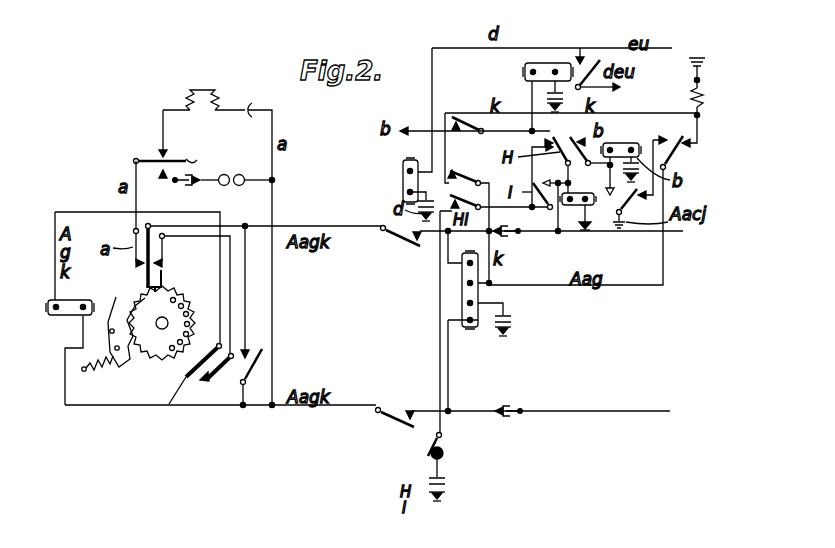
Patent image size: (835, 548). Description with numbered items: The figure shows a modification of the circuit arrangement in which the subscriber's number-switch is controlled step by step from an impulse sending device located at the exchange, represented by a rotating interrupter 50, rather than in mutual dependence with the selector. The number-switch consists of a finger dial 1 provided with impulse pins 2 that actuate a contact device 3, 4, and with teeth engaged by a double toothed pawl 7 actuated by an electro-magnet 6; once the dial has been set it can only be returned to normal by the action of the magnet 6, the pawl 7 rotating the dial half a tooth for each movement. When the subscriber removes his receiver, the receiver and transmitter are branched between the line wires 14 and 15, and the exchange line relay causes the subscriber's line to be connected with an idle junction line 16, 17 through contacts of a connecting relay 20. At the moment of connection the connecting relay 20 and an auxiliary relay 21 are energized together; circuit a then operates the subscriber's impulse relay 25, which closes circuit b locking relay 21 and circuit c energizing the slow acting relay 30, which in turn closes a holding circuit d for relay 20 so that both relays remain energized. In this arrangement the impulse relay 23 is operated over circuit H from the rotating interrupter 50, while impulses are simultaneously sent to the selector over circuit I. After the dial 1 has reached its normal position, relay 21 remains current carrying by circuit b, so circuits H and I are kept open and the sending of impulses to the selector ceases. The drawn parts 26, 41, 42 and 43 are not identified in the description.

The finger dial 1 is at (163, 357).
The impulse pins 2 is at (177, 294).
The contact device 3 is at (187, 388).
The contact device 4 is at (203, 383).
The electro-magnet 6 is at (70, 317).
The double toothed pawl 7 is at (122, 297).
The line wire 14 is at (318, 226).
The line wire 15 is at (350, 410).
The junction line 16 is at (531, 238).
The junction line 17 is at (605, 416).
The connecting relay 20 is at (402, 178).
The auxiliary relay 21 is at (622, 143).
The impulse relay 23 is at (576, 194).
The subscriber's impulse relay 25 is at (461, 300).
The armature 26 is at (144, 268).
The slow acting relay 30 is at (541, 65).
The contact springs 41 is at (161, 262).
The switch 42 is at (263, 348).
The resistor 43 is at (690, 84).
The rotating interrupter 50 is at (447, 467).